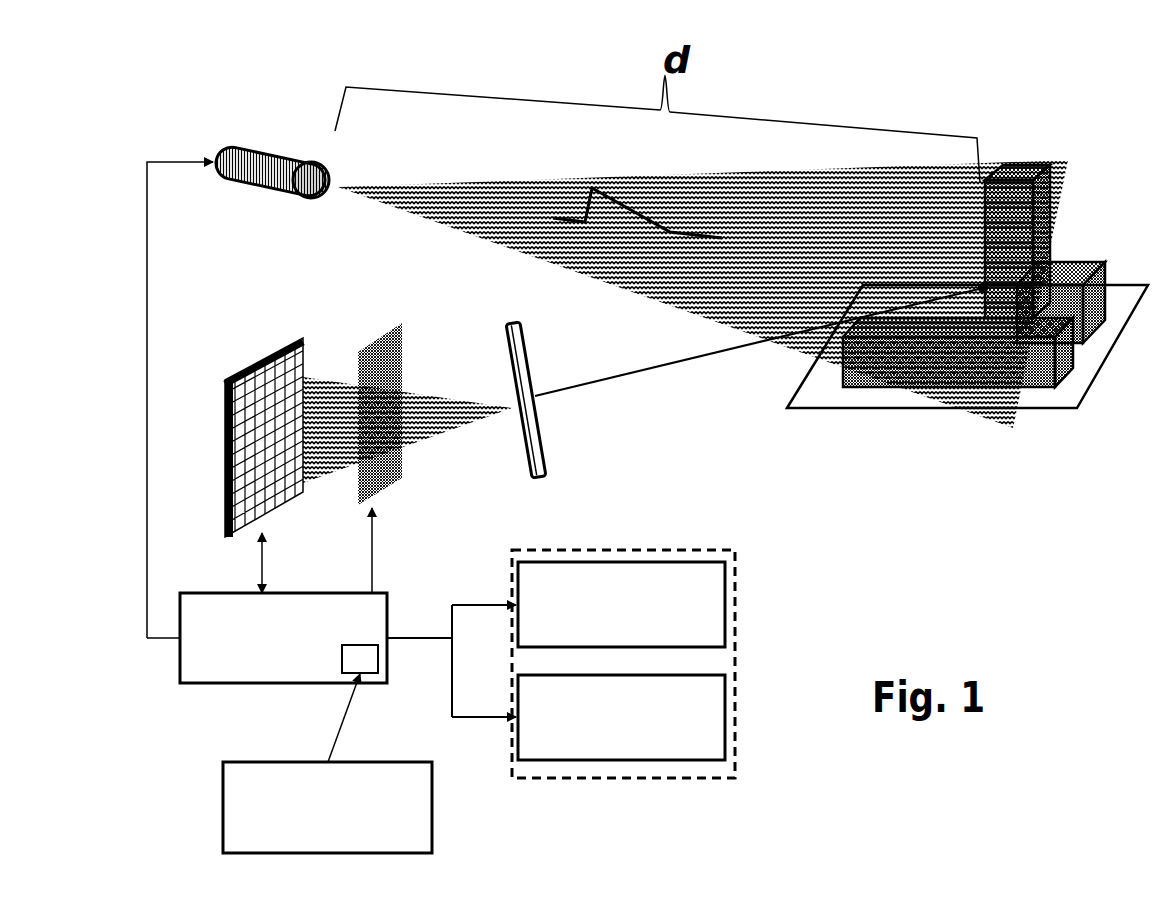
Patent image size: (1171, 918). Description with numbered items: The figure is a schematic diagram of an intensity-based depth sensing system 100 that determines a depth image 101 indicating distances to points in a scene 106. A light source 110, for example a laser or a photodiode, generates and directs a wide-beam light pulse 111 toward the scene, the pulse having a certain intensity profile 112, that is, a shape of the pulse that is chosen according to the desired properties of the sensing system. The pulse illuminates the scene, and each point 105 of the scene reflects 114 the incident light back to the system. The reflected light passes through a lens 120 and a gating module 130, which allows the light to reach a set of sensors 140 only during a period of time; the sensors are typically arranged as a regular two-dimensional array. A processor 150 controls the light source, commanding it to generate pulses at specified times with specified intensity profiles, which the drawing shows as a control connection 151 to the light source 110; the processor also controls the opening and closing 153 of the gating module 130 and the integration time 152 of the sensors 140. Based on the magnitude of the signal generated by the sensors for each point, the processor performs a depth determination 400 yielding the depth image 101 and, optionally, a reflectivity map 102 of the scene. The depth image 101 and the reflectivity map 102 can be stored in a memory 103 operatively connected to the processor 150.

The system 100 is at (920, 535).
The depth image 101 is at (600, 562).
The reflectivity map 102 is at (625, 760).
The memory 103 is at (735, 578).
The point 105 is at (983, 288).
The scene 106 is at (1010, 162).
The light source 110 is at (282, 155).
The wide-beam light pulse 111 is at (437, 185).
The intensity profile 112 is at (583, 192).
The reflected light 114 is at (650, 368).
The lens 120 is at (507, 323).
The gating module 130 is at (382, 334).
The set of sensors 140 is at (272, 343).
The processor 150 is at (230, 683).
The emitter control line 151 is at (147, 263).
The integration time 152 is at (262, 562).
The opening and closing 153 is at (372, 552).
The depth determination 400 is at (375, 762).